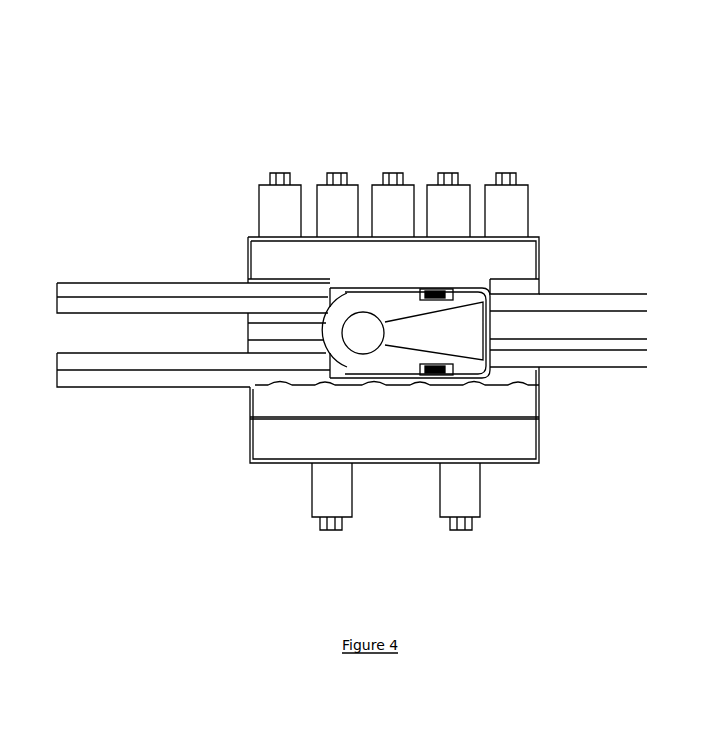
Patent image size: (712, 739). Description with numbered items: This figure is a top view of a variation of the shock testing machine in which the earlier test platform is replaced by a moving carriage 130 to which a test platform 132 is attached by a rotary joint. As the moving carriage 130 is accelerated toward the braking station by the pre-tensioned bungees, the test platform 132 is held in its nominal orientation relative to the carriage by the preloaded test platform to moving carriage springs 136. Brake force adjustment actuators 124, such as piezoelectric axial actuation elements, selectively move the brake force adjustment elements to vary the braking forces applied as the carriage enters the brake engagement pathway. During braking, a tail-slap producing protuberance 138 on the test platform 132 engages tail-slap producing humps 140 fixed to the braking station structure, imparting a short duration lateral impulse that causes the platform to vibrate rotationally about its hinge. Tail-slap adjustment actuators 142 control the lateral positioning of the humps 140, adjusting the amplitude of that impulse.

The brake force adjustment actuators 124 is at (388, 156).
The moving carriage 130 is at (330, 289).
The test platform 132 is at (528, 312).
The preloaded test platform to moving carriage springs 136 is at (445, 291).
The tail-slap producing protuberance 138 is at (478, 383).
The tail-slap producing humps 140 is at (411, 389).
The tail-slap adjustment actuators 142 is at (452, 505).